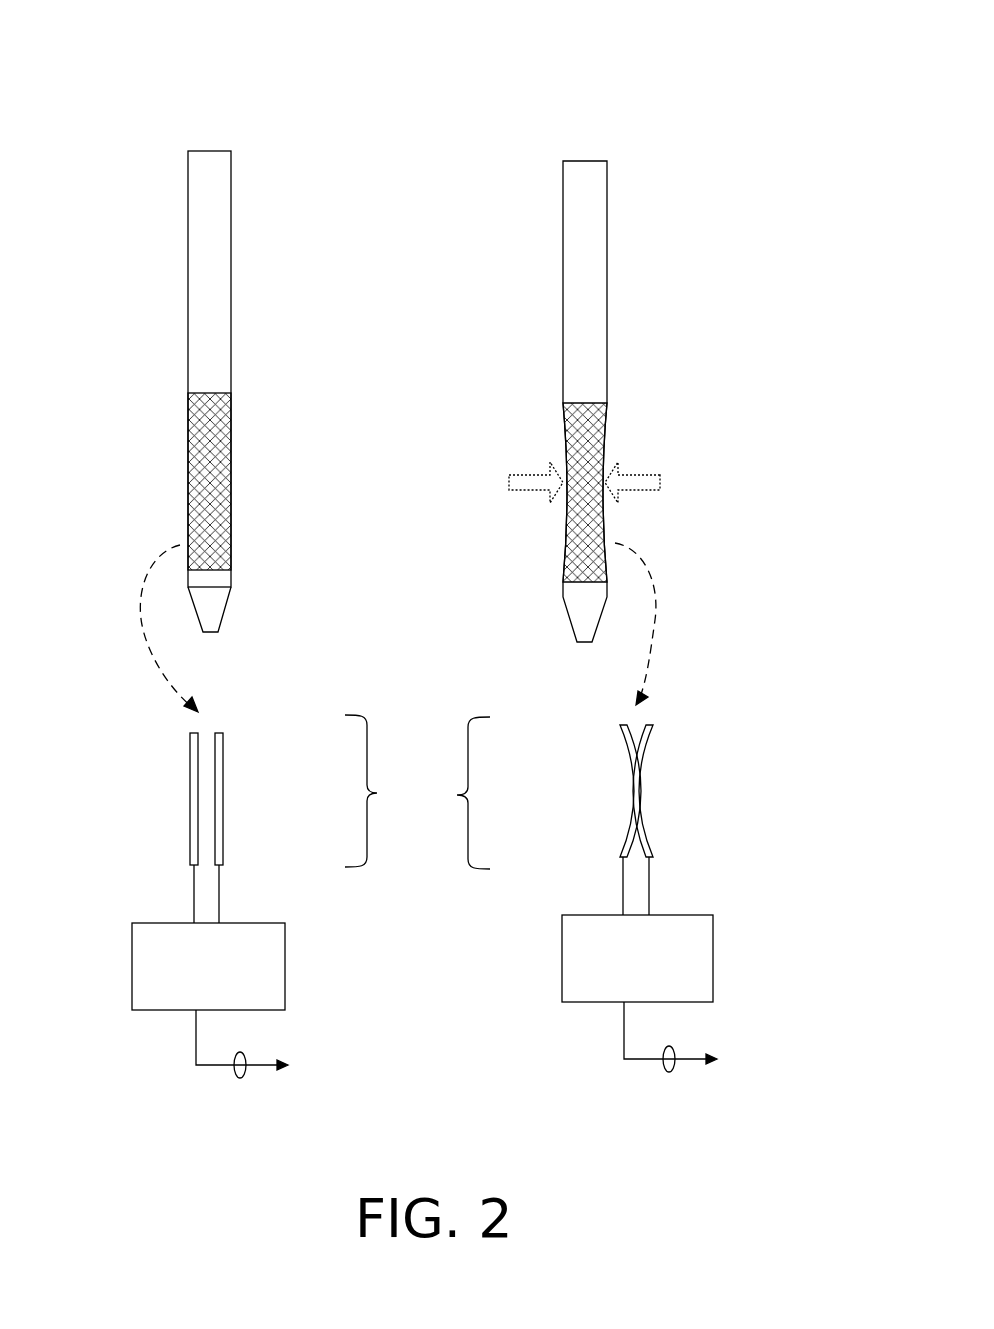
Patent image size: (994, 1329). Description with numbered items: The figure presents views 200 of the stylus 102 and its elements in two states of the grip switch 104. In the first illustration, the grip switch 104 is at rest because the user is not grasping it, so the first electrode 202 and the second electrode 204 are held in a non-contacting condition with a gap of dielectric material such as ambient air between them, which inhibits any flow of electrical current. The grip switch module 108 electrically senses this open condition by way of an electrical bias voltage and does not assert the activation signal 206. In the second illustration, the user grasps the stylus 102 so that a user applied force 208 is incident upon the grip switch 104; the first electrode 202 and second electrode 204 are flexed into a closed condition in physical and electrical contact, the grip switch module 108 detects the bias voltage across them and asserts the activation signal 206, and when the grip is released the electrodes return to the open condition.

The views 200 is at (676, 55).
The stylus 102 is at (208, 151).
The grip switch 104 is at (662, 379).
The grip switch module 108 is at (652, 993).
The first electrode 202 is at (631, 785).
The second electrode 204 is at (710, 797).
The activation signal 206 is at (669, 1074).
The user applied force 208 is at (533, 490).